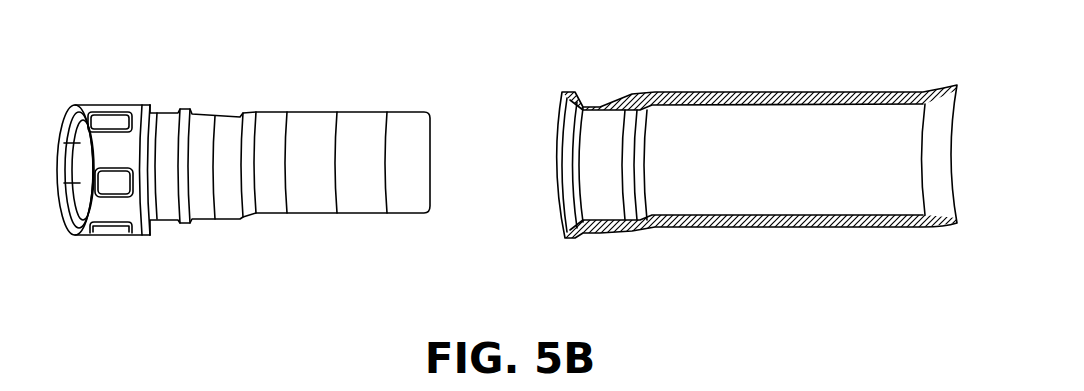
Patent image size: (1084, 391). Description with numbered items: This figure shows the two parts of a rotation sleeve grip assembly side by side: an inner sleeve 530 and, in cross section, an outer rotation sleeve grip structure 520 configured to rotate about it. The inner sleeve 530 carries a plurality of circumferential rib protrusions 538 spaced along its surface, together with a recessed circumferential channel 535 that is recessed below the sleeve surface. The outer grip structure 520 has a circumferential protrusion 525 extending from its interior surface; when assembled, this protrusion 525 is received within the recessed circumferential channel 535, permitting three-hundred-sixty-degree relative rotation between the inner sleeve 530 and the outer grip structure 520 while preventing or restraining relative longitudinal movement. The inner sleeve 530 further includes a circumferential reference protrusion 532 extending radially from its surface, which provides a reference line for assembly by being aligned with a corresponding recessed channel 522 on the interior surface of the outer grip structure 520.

The outer rotation sleeve grip structure 520 is at (753, 92).
The recessed channel 522 is at (576, 204).
The circumferential protrusion 525 is at (640, 195).
The inner sleeve 530 is at (116, 64).
The circumferential reference protrusion 532 is at (178, 114).
The recessed circumferential channel 535 is at (240, 117).
The circumferential rib protrusions 538 is at (288, 218).